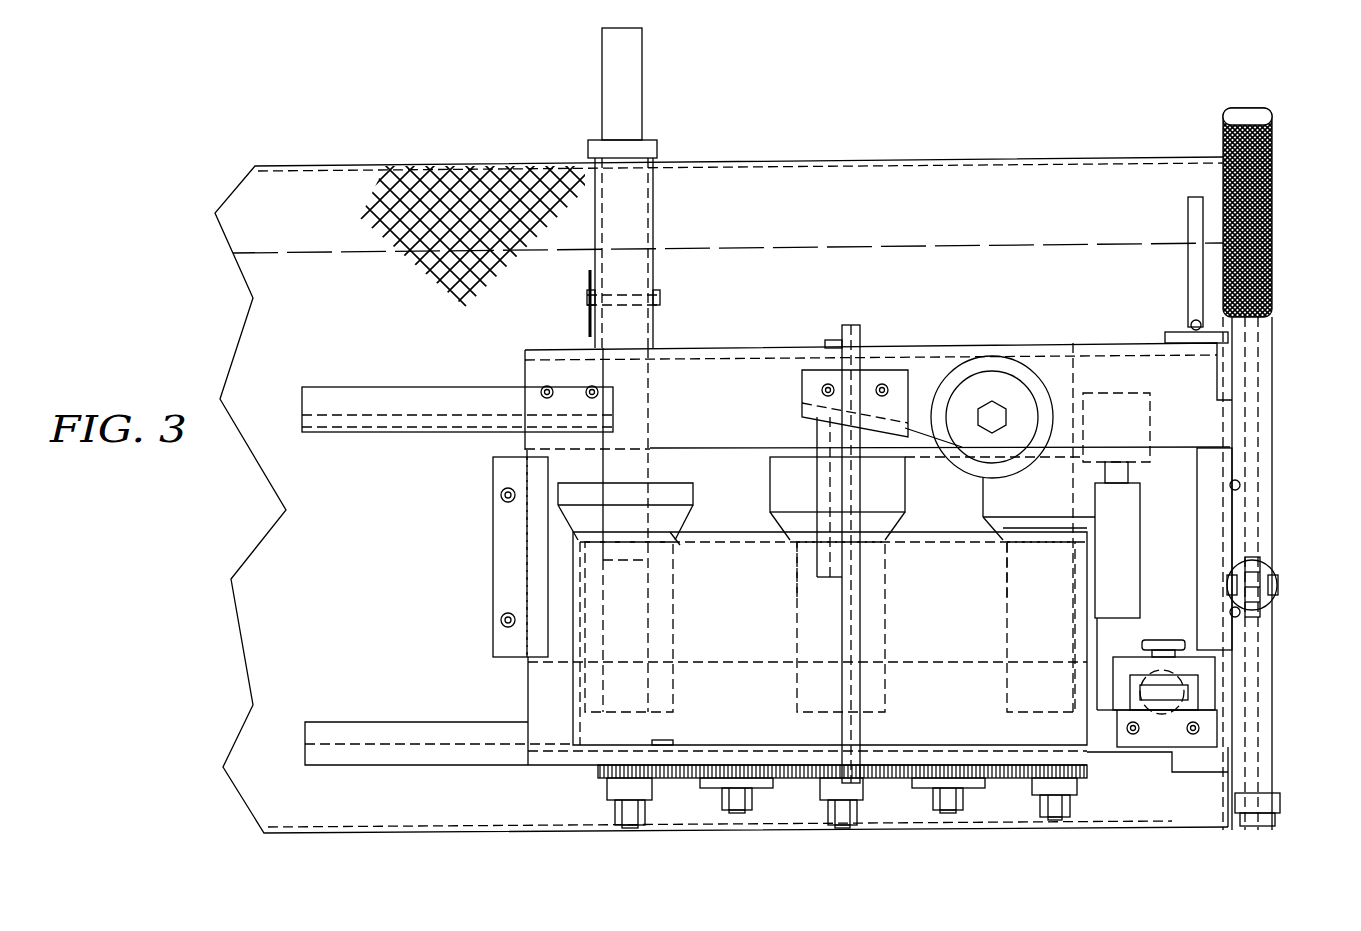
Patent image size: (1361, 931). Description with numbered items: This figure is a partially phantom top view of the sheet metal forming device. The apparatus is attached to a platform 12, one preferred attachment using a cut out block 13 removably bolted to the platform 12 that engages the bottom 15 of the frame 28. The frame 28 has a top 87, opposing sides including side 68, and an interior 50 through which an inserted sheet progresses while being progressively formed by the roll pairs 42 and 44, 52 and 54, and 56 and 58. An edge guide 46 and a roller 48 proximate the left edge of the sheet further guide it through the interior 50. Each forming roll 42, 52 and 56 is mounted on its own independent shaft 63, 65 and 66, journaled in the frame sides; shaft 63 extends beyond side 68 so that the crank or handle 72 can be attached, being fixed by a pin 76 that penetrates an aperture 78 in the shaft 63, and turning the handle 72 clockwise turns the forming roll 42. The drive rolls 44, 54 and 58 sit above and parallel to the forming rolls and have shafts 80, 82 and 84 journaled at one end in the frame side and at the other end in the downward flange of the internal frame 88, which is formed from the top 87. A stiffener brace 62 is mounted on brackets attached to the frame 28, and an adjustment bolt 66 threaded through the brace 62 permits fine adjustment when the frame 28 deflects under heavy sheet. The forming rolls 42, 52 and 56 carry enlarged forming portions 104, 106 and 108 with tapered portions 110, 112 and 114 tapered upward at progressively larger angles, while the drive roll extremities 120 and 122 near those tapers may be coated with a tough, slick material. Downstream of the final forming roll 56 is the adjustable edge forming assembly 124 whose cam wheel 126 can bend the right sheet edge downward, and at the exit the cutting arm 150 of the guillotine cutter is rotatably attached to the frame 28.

The platform 12 is at (327, 606).
The cut out block 13 is at (507, 472).
The bottom 15 is at (560, 650).
The frame 28 is at (752, 350).
The forming roll 42 is at (677, 487).
The drive roll 44 is at (665, 698).
The edge guide 46 is at (900, 377).
The roller 48 is at (980, 383).
The interior 50 is at (948, 477).
The forming roll 52 is at (788, 483).
The drive roll 54 is at (870, 647).
The forming roll 56 is at (1003, 495).
The drive roll 58 is at (1020, 630).
The brace 62 is at (853, 322).
The shaft 63 is at (647, 420).
The shaft 65 is at (817, 431).
The adjustment bolt 66 is at (1040, 357).
The side 68 is at (672, 350).
The crank or handle 72 is at (627, 77).
The pin 76 is at (650, 298).
The aperture 78 is at (622, 290).
The shaft 80 is at (645, 755).
The shaft 82 is at (833, 753).
The shaft 84 is at (1048, 753).
The top 87 is at (720, 645).
The internal frame 88 is at (928, 350).
The enlarged forming portion 104 is at (665, 537).
The enlarged forming portion 106 is at (885, 540).
The enlarged forming portion 108 is at (1103, 497).
The tapered portion 110 is at (578, 515).
The tapered portion 112 is at (787, 530).
The tapered portion 114 is at (1102, 527).
The extremity 120 is at (803, 563).
The extremity 122 is at (1017, 567).
The adjustable edge forming assembly 124 is at (1142, 778).
The cam wheel 126 is at (1167, 688).
The cutting arm 150 is at (1247, 117).